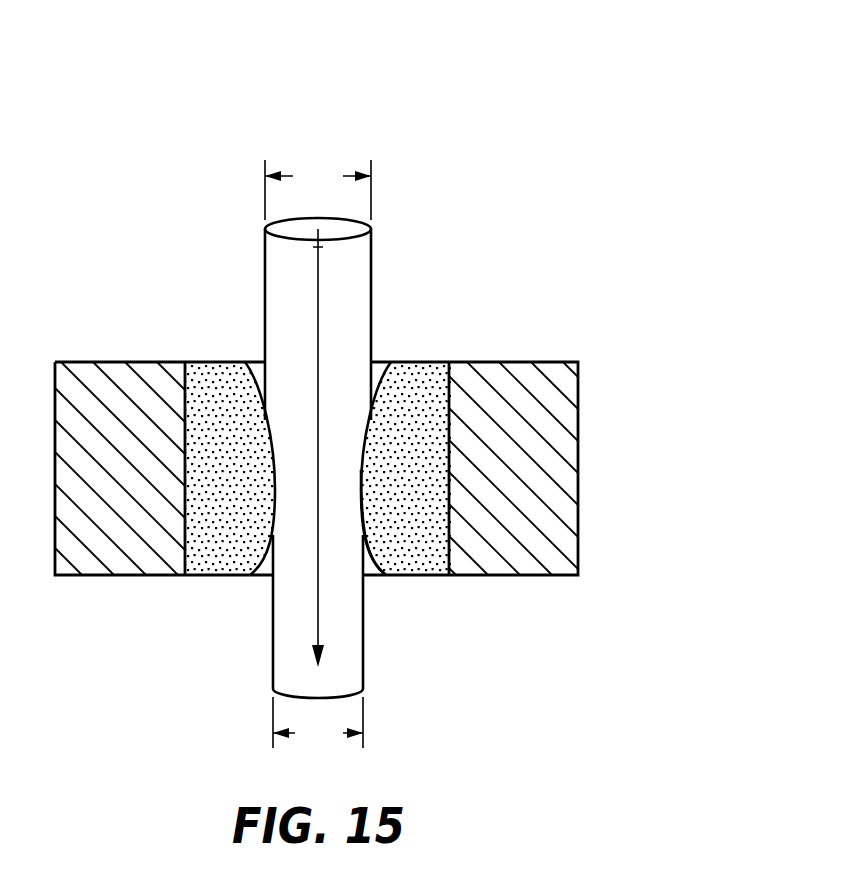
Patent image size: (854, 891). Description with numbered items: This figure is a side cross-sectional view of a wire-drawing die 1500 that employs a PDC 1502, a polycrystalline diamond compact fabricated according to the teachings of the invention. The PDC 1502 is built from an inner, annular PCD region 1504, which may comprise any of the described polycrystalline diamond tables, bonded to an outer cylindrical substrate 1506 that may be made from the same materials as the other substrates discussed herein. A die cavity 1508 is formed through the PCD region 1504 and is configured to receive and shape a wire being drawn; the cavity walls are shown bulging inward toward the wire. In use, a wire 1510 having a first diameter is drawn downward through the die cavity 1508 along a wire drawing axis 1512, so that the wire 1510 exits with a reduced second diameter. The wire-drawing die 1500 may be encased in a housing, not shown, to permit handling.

The wire-drawing die 1500 is at (423, 390).
The PDC 1502 is at (423, 460).
The PCD region 1504 is at (224, 393).
The substrate 1506 is at (100, 388).
The die cavity 1508 is at (370, 572).
The wire 1510 is at (298, 508).
The wire drawing axis 1512 is at (318, 612).